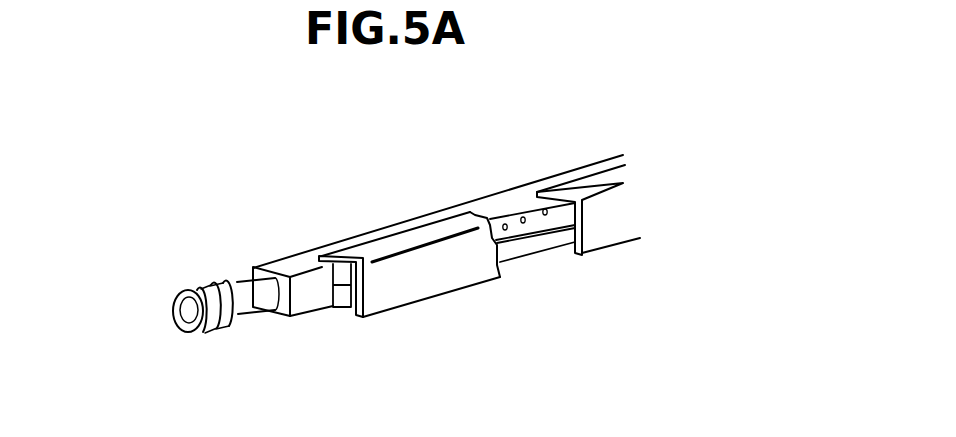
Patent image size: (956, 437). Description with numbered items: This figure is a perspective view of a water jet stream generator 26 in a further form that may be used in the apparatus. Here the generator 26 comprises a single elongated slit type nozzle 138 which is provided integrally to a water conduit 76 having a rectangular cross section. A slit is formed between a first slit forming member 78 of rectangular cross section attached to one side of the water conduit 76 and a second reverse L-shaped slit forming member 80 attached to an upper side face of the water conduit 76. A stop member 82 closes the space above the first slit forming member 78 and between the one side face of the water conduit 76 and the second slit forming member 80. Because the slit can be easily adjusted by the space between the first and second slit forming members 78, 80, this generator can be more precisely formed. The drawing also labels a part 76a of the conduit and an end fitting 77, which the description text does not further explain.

The water jet stream generator 26 is at (603, 132).
The water conduit 76 is at (297, 265).
The clip 76a is at (546, 214).
The plug 77 is at (173, 310).
The first slit forming member 78 is at (342, 307).
The second slit forming member 80 is at (440, 278).
The stop member 82 is at (348, 277).
The slit type nozzle 138 is at (420, 236).